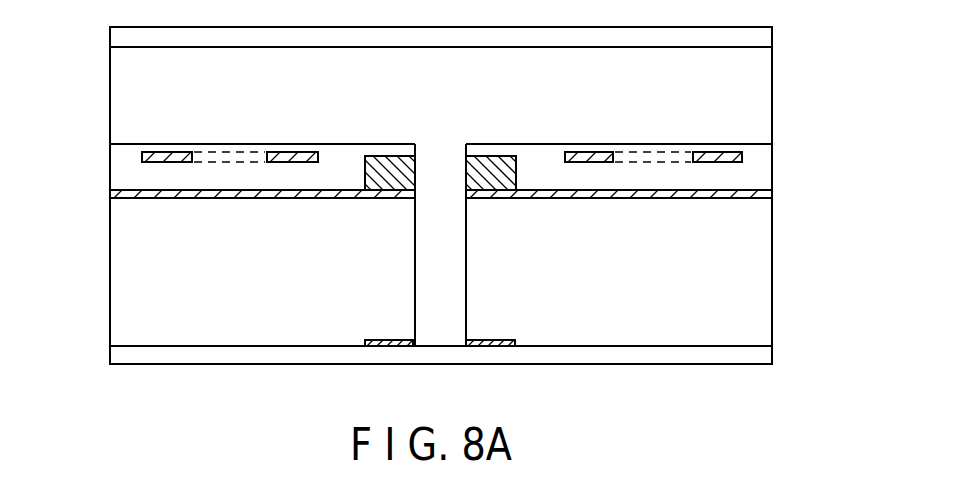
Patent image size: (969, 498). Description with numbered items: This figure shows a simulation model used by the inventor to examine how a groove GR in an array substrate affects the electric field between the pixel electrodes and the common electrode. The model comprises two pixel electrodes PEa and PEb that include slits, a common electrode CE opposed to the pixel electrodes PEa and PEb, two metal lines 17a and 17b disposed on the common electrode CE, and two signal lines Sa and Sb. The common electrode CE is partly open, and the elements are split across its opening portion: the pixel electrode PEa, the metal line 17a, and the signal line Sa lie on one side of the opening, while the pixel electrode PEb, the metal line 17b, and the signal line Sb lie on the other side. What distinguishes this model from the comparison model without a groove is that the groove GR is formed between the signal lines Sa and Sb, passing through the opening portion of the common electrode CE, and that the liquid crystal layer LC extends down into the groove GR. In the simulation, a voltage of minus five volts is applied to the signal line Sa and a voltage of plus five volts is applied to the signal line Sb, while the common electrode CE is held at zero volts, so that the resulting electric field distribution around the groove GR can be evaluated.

The liquid crystal layer LC is at (752, 83).
The groove GR is at (441, 143).
The common electrode CE is at (192, 199).
The pixel electrode PEa is at (155, 163).
The pixel electrode PEb is at (722, 165).
The metal line 17a is at (367, 172).
The metal line 17b is at (512, 172).
The signal line Sa is at (377, 340).
The signal line Sb is at (500, 340).